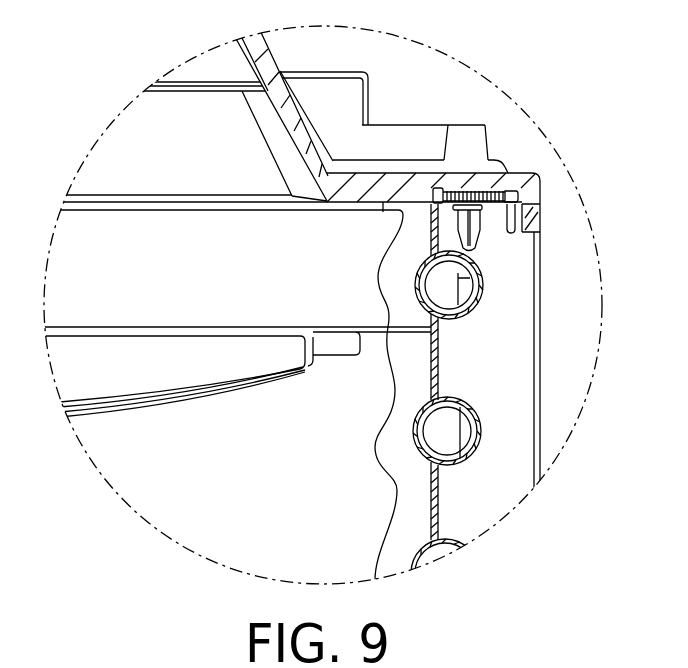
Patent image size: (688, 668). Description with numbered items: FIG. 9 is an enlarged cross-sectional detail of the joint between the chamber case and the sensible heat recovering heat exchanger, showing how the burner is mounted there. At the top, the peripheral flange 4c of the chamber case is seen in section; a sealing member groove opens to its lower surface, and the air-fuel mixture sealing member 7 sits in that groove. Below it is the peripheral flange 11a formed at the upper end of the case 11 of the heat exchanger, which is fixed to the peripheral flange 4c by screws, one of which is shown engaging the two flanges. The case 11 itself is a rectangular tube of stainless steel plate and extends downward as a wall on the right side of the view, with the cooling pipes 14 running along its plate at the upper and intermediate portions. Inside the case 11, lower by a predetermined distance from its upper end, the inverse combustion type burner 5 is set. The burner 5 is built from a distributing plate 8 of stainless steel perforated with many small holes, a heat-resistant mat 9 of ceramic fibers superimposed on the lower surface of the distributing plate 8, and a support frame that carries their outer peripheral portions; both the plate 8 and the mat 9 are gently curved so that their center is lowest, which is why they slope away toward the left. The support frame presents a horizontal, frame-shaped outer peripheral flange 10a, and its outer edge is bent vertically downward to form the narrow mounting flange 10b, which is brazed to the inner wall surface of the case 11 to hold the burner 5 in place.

The peripheral flange 4c is at (512, 178).
The air-fuel mixture sealing member 7 is at (514, 193).
The peripheral flange 11a is at (487, 206).
The cooling pipe 14 is at (473, 305).
The case 11 is at (445, 368).
The outer peripheral flange 10a is at (368, 327).
The mounting flange 10b is at (428, 347).
The distributing plate 8 is at (133, 402).
The heat-resistant mat 9 is at (183, 397).
The inverse combustion type burner 5 is at (244, 398).